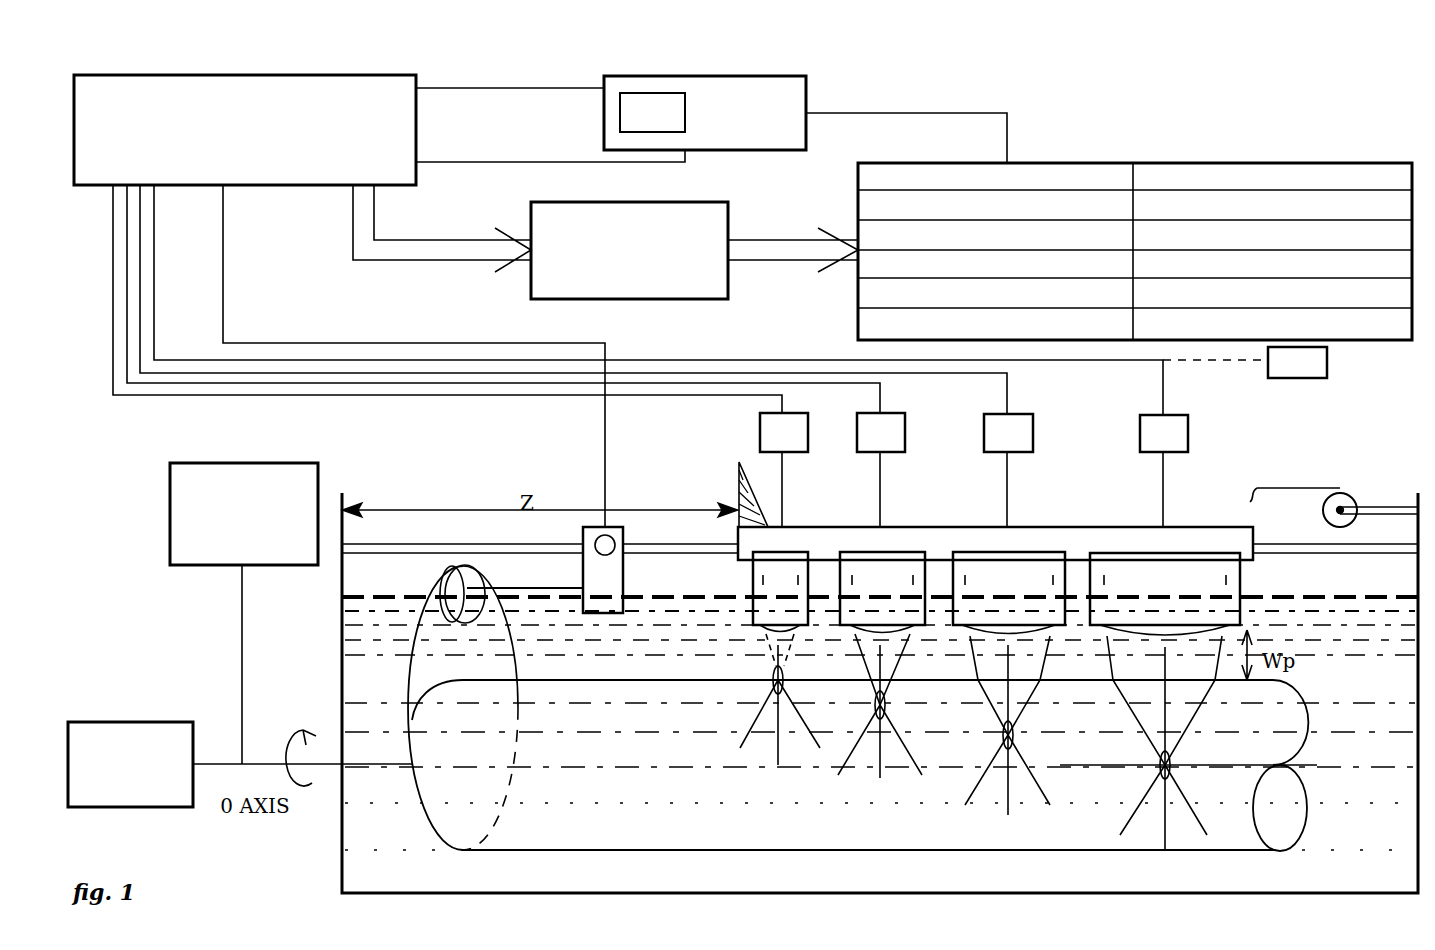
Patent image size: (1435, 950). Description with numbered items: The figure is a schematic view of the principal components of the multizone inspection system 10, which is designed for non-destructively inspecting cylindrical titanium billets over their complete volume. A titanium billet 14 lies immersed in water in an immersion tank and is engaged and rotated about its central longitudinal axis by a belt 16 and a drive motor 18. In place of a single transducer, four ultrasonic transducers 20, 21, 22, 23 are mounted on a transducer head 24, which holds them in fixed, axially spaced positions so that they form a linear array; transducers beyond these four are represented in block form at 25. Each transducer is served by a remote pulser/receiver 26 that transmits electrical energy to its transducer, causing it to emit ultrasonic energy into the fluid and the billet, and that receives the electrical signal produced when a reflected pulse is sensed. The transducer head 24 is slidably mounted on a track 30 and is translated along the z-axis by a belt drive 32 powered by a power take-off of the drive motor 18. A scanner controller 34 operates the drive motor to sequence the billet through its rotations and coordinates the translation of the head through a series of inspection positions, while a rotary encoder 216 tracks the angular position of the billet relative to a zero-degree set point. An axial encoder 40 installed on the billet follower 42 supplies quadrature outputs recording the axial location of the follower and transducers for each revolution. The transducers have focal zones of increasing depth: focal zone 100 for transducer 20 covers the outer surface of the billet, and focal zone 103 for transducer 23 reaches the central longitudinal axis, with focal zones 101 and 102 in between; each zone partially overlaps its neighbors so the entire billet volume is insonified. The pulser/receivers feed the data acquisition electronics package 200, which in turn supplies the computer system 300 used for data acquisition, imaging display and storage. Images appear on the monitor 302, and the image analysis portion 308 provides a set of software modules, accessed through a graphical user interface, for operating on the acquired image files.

The multizone inspection system 10 is at (1085, 138).
The titanium billet 14 is at (864, 765).
The belt 16 is at (408, 690).
The drive motor 18 is at (623, 578).
The ultrasonic transducer 20 is at (802, 617).
The ultrasonic transducer 21 is at (905, 624).
The ultrasonic transducer 22 is at (1027, 638).
The ultrasonic transducer 23 is at (1179, 657).
The transducer head 24 is at (1057, 530).
The additional transducers in block form 25 is at (1245, 362).
The pulser/receiver 26 is at (790, 413).
The track 30 is at (405, 544).
The belt drive 32 is at (1300, 488).
The scanner controller 34 is at (170, 512).
The axial encoder 40 is at (605, 535).
The billet follower 42 is at (738, 468).
The focal zone 100 is at (783, 683).
The focal zone 101 is at (885, 705).
The focal zone 102 is at (1012, 735).
The focal zone 103 is at (1170, 765).
The data acquisition electronics package 200 is at (265, 186).
The rotary encoder 216 is at (125, 722).
The computer system 300 is at (531, 278).
The monitor 302 is at (604, 100).
The image analysis portion 308 is at (1275, 163).